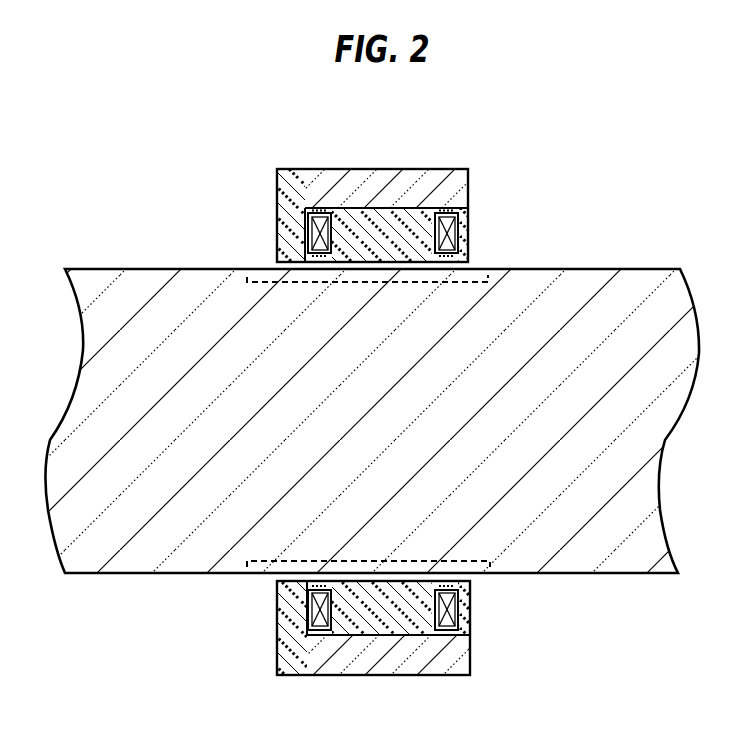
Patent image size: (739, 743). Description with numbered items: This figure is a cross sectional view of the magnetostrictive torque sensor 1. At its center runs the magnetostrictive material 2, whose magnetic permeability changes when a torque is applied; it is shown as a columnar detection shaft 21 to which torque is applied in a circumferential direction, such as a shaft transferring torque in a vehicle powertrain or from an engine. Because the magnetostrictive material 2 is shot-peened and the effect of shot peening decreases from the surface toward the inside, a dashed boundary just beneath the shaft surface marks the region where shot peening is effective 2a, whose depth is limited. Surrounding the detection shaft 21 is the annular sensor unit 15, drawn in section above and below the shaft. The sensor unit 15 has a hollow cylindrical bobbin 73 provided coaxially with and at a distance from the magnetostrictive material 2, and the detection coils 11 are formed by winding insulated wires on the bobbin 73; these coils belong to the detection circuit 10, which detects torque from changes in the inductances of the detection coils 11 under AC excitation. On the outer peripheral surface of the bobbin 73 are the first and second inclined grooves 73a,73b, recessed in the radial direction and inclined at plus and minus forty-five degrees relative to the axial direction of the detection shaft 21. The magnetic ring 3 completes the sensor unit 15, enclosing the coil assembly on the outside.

The magnetostrictive torque sensor 1 is at (404, 165).
The magnetostrictive material 2 is at (87, 273).
The detection shaft 21 is at (148, 278).
The region where shot peening is effective 2a is at (250, 276).
The magnetic ring 3 is at (468, 170).
The detection circuit 10 is at (448, 212).
The detection coils 11 is at (320, 212).
The sensor unit 15 is at (273, 167).
The bobbin 73 is at (277, 212).
The first and second inclined grooves 73a,73b is at (460, 253).